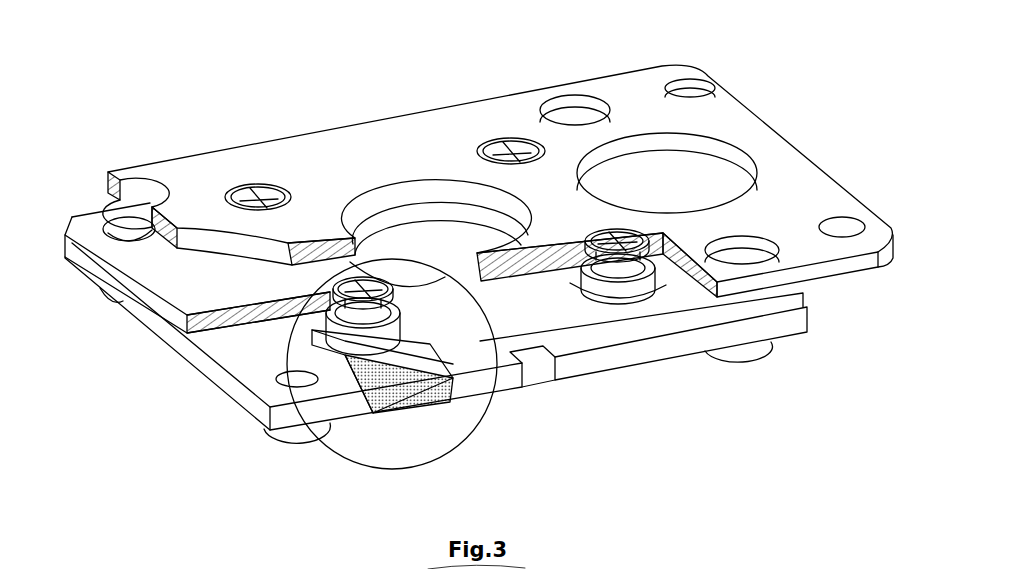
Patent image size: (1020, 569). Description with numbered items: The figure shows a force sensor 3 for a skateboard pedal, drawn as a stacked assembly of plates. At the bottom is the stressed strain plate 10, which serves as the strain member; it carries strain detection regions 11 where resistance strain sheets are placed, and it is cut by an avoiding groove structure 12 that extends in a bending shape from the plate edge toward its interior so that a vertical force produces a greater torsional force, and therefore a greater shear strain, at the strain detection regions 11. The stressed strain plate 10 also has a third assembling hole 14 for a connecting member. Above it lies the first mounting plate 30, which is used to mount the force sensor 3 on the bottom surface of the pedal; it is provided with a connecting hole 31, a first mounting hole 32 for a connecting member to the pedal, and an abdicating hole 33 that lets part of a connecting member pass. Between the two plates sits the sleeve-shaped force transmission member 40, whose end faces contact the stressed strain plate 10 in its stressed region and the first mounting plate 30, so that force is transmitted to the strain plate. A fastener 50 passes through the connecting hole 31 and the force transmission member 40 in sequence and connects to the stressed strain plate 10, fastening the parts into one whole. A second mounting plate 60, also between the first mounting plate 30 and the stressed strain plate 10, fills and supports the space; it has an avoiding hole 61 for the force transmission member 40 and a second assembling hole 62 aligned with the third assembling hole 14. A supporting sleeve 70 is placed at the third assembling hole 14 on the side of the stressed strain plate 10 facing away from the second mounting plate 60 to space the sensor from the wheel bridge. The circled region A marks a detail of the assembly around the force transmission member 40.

The force sensor 3 is at (157, 118).
The stressed strain plate 10 is at (233, 337).
The strain detection region 11 is at (398, 365).
The avoiding groove structure 12 is at (533, 373).
The third assembling hole 14 is at (300, 386).
The first mounting plate 30 is at (297, 222).
The connecting hole 31 is at (617, 230).
The first mounting hole 32 is at (840, 225).
The abdicating hole 33 is at (745, 252).
The force transmission member 40 is at (343, 333).
The fastener 50 is at (363, 280).
The second mounting plate 60 is at (740, 310).
The avoiding hole 61 is at (577, 290).
The second assembling hole 62 is at (137, 232).
The supporting sleeve 70 is at (297, 441).
The detail region A is at (474, 434).